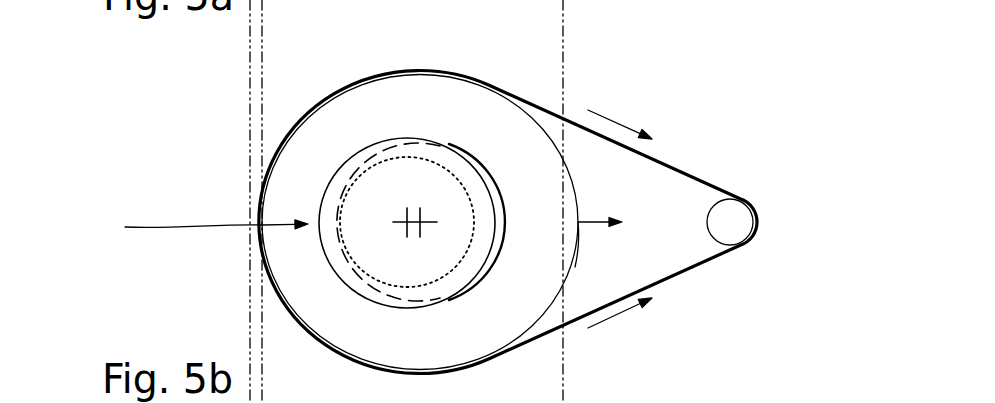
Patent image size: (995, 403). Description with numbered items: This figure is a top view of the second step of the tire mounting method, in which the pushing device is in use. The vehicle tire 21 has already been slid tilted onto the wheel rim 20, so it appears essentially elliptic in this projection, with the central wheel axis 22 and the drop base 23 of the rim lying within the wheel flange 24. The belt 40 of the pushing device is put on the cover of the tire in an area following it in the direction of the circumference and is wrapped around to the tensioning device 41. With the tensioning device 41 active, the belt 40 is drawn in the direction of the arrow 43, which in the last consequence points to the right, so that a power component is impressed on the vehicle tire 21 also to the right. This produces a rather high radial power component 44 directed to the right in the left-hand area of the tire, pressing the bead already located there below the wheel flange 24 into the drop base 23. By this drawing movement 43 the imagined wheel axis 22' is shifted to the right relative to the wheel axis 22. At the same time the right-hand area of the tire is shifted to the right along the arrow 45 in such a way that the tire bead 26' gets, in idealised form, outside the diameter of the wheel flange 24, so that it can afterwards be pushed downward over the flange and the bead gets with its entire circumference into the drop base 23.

The wheel rim 20 is at (318, 205).
The vehicle tire 21 is at (563, 110).
The wheel axis 22 is at (314, 191).
The imagined wheel axis 22' is at (487, 150).
The drop base 23 is at (408, 158).
The wheel flange 24 is at (340, 270).
The tire bead 26' is at (714, 277).
The belt 40 is at (667, 166).
The tensioning device 41 is at (740, 210).
The arrow / drawing movement 43 is at (620, 122).
The radial power component 44 is at (195, 225).
The arrow 45 is at (597, 220).